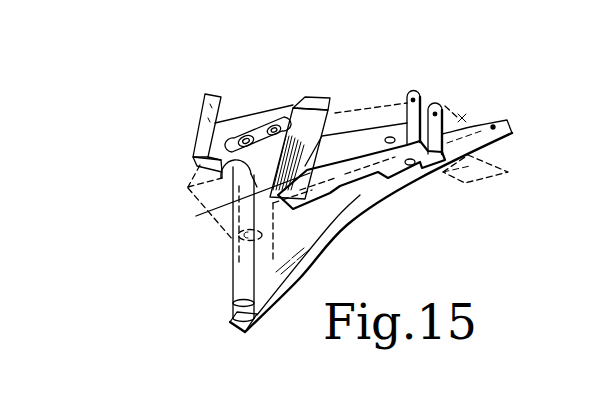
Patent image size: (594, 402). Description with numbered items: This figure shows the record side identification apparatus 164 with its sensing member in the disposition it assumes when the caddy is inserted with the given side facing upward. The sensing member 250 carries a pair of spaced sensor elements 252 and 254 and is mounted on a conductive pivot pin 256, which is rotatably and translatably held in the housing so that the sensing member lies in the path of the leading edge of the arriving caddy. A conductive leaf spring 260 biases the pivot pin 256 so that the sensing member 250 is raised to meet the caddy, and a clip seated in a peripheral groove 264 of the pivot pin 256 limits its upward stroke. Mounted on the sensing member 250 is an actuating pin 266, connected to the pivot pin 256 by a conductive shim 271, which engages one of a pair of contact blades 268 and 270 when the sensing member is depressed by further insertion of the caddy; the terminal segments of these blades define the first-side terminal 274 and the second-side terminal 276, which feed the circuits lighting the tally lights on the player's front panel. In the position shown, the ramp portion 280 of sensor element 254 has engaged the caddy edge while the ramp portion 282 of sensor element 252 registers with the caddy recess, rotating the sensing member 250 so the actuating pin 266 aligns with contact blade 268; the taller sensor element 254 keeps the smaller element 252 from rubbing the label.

The record side identification apparatus 164 is at (250, 156).
The sensing member 250 is at (326, 125).
The sensor element 252 is at (187, 126).
The sensor element 254 is at (329, 98).
The pivot pin 256 is at (206, 241).
The leaf spring 260 is at (507, 120).
The peripheral groove 264 is at (233, 324).
The actuating pin 266 is at (312, 198).
The contact blade 268 is at (368, 142).
The contact blade 270 is at (388, 143).
The conductive shim 271 is at (258, 131).
The SIDE 1 terminal 274 is at (415, 98).
The SIDE 2 terminal 276 is at (452, 128).
The ramp portion 280 is at (205, 213).
The ramp portion 282 is at (192, 157).